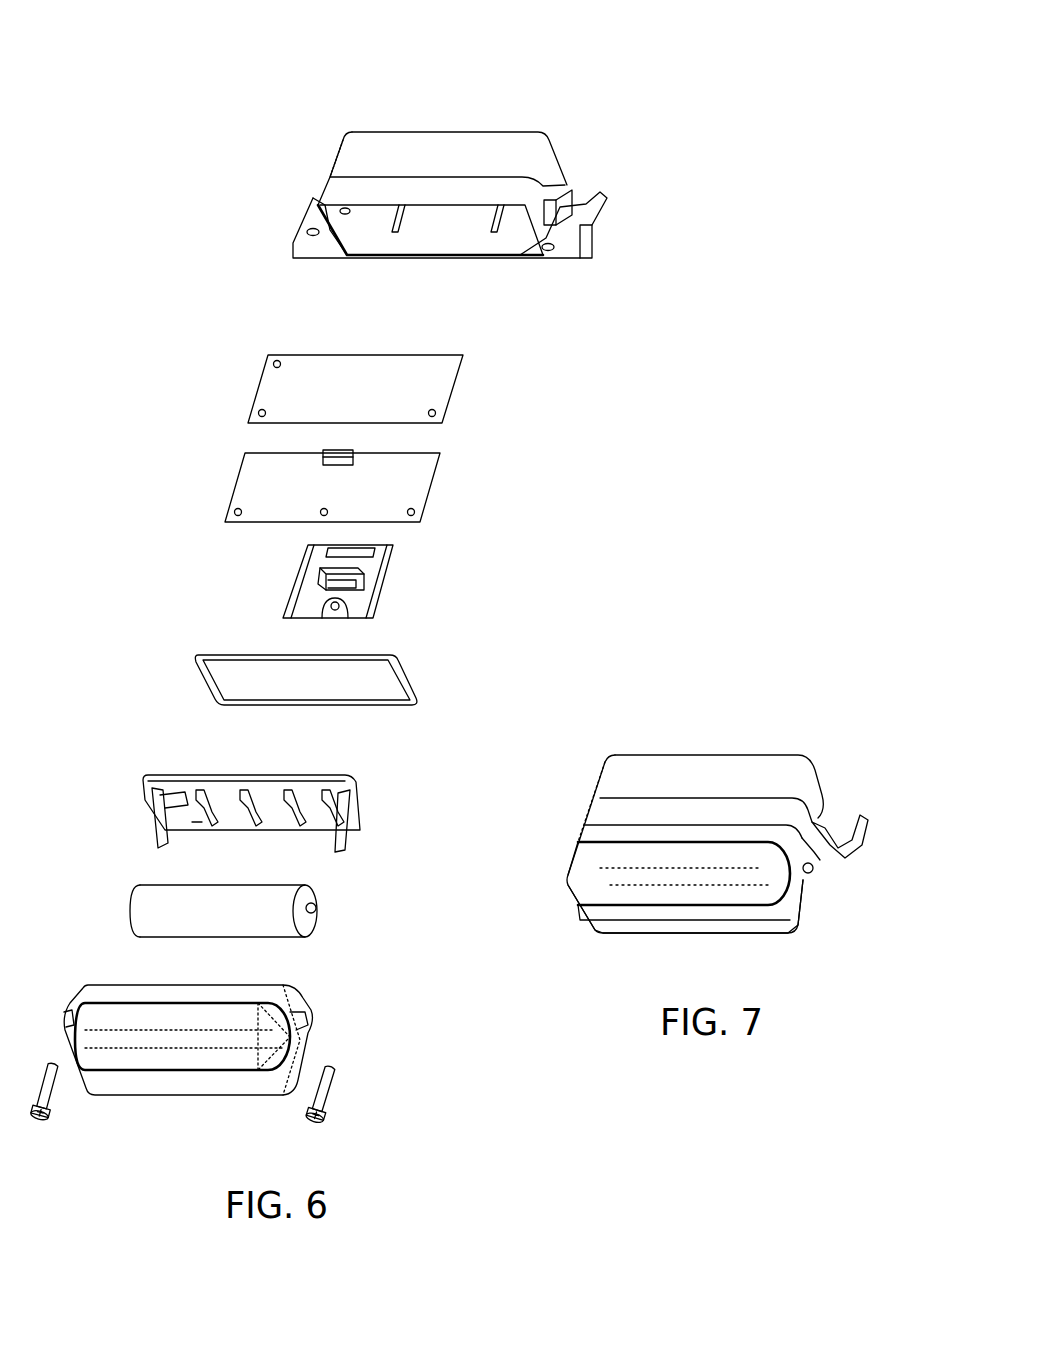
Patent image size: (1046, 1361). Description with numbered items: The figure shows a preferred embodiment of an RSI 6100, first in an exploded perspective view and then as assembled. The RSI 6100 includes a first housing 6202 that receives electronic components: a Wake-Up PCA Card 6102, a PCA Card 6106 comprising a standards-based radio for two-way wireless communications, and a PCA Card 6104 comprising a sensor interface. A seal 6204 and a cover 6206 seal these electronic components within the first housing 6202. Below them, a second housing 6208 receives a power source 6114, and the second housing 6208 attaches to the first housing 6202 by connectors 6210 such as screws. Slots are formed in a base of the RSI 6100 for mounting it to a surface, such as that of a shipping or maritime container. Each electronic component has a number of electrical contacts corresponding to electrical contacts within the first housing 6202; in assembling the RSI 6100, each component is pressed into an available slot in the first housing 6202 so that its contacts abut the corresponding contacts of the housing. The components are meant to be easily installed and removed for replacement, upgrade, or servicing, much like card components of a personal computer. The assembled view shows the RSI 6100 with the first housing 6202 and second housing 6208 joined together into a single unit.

In FIG. 6, the RSI 6100 is at (432, 80).
In FIG. 7, the RSI 6100 is at (705, 682).
In FIG. 6, the first housing 6202 is at (547, 165).
In FIG. 7, the first housing 6202 is at (763, 775).
In FIG. 6, the Wake-Up PCA Card 6102 is at (468, 386).
In FIG. 6, the PCA Card 6106 is at (438, 482).
In FIG. 6, the PCA Card 6104 is at (395, 585).
In FIG. 6, the seal 6204 is at (405, 675).
In FIG. 6, the cover 6206 is at (355, 820).
In FIG. 6, the power source 6114 is at (313, 932).
In FIG. 6, the second housing 6208 is at (318, 1012).
In FIG. 7, the second housing 6208 is at (788, 908).
In FIG. 6, the connectors 6210 is at (325, 1087).